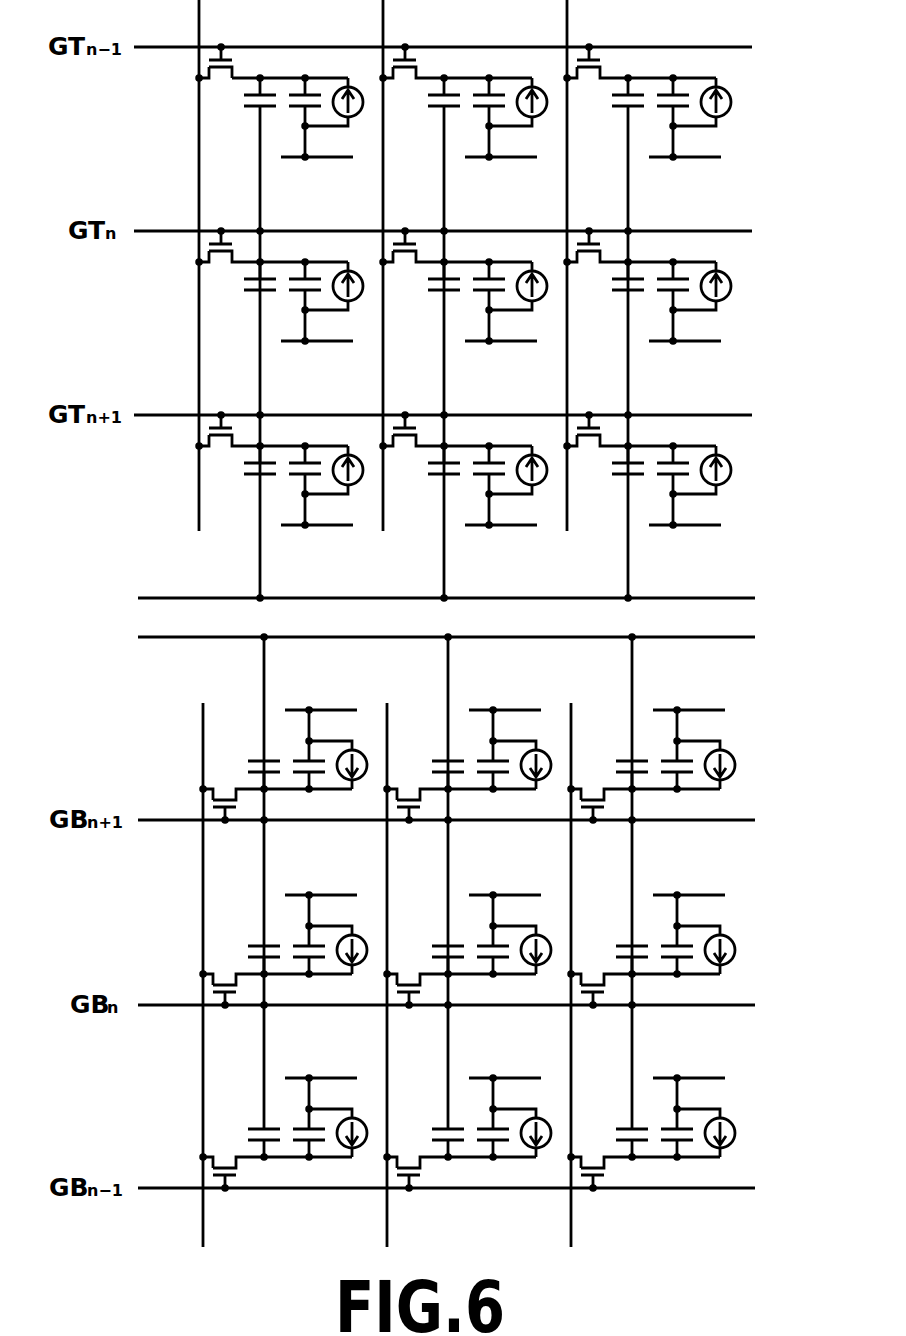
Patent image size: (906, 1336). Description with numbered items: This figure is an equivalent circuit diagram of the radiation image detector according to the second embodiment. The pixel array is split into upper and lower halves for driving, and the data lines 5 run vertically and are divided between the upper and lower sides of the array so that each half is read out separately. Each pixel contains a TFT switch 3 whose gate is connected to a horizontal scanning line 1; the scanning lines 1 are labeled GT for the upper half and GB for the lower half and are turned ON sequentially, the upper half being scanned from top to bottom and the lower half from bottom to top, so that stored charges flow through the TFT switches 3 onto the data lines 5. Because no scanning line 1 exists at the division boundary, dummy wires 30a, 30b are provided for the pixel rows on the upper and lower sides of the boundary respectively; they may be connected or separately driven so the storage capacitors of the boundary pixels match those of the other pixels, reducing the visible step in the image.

The scanning line 1 is at (760, 1160).
The TFT switch 3 is at (225, 99).
The data line 5 is at (592, 8).
The dummy wire 30a is at (740, 598).
The dummy wire 30b is at (740, 637).